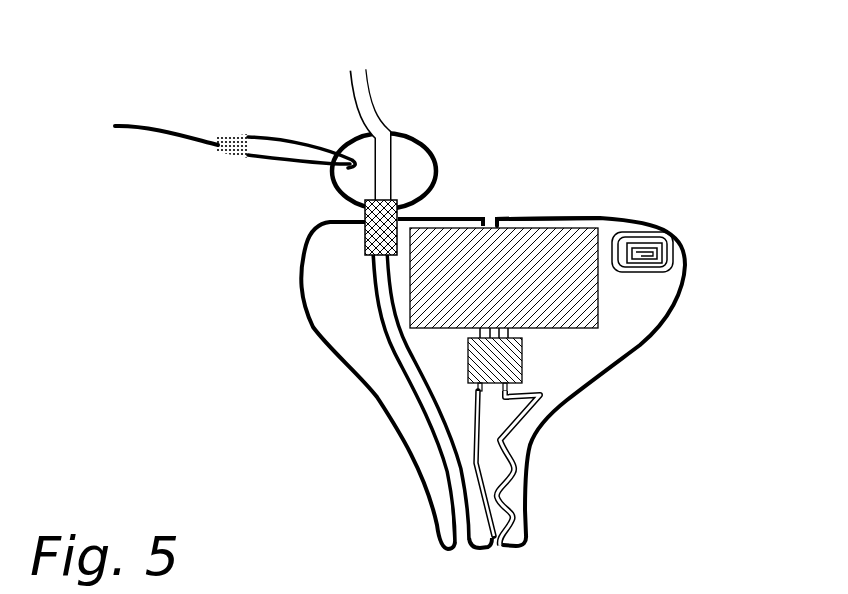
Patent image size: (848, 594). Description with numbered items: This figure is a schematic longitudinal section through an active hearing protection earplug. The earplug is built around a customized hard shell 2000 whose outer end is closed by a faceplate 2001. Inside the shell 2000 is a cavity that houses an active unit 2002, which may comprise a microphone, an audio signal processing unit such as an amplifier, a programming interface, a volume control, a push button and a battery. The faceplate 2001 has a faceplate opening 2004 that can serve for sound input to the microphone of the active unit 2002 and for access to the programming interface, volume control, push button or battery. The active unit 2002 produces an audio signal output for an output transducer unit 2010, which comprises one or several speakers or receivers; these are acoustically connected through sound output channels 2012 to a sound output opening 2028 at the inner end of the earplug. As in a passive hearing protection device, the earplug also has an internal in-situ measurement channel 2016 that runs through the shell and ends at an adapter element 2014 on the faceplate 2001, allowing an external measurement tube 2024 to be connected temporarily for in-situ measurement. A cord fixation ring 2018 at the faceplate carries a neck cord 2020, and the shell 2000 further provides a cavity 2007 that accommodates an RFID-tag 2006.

The customized hard shell 2000 is at (660, 325).
The faceplate 2001 is at (445, 215).
The active unit 2002 is at (565, 225).
The faceplate opening 2004 is at (490, 218).
The RFID-tag 2006 is at (677, 235).
The cavity 2007 is at (663, 227).
The output transducer unit 2010 is at (520, 380).
The sound output channels 2012 is at (500, 447).
The adapter element 2014 is at (370, 258).
The internal in-situ measurement channel 2016 is at (435, 448).
The cord fixation ring 2018 is at (330, 192).
The neck cord 2020 is at (287, 142).
The external measurement tube 2024 is at (358, 98).
The sound output opening 2028 is at (497, 548).